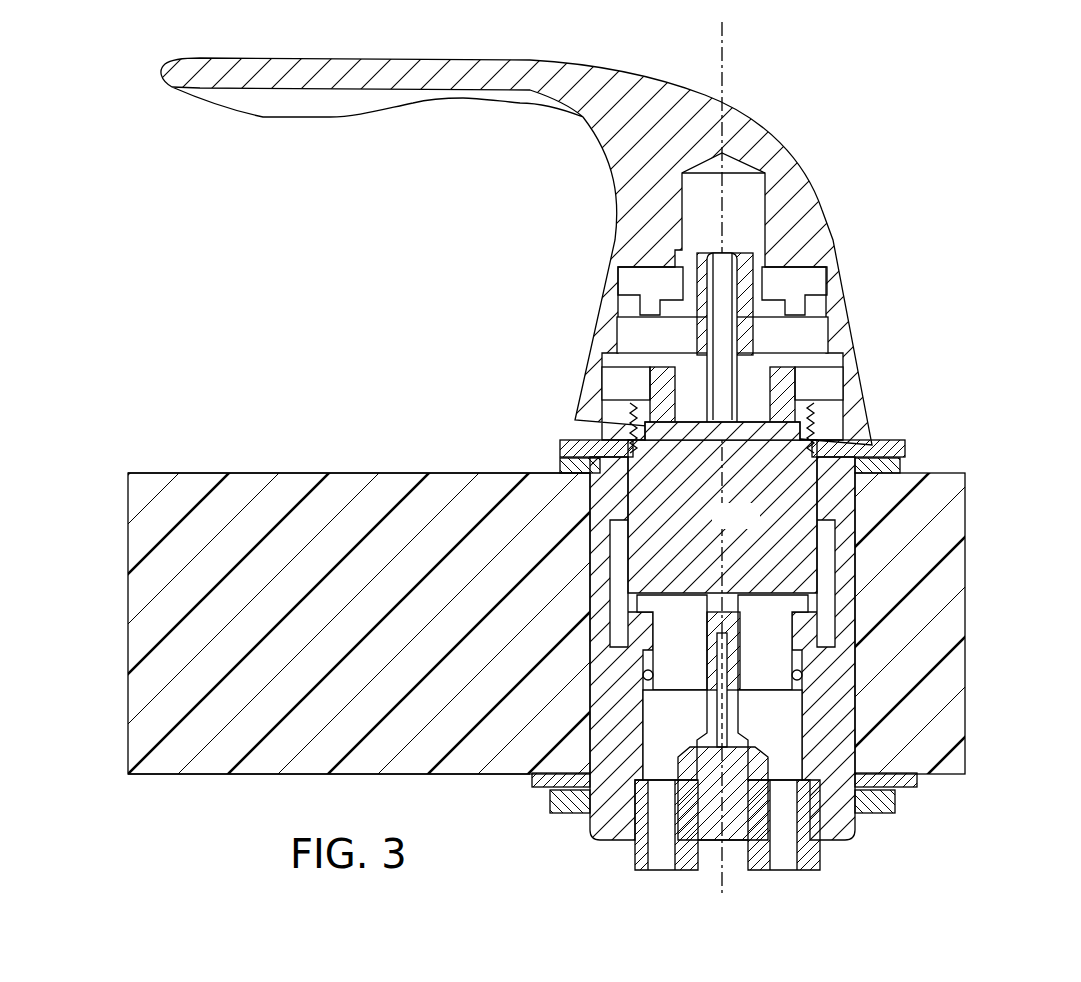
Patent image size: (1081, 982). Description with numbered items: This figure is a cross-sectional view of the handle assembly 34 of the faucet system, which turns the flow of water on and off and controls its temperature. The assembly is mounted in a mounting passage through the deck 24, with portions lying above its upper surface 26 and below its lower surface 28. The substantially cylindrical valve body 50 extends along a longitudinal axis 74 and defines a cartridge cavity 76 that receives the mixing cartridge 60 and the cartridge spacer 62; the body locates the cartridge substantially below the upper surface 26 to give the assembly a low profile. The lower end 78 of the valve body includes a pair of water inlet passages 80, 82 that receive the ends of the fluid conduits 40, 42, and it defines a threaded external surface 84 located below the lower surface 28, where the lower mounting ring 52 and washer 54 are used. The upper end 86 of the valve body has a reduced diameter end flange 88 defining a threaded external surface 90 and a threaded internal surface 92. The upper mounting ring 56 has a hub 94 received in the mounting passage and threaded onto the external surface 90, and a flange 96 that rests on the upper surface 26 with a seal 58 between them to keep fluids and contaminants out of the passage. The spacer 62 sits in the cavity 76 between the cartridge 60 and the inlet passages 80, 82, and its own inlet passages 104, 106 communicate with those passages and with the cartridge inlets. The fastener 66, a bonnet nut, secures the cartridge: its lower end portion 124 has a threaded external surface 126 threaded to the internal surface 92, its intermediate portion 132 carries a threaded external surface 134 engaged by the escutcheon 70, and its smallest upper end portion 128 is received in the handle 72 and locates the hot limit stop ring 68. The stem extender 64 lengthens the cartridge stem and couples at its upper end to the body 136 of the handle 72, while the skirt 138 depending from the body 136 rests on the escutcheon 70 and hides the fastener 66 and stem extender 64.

The deck 24 is at (140, 612).
The upper surface 26 is at (152, 472).
The lower surface 28 is at (152, 776).
The handle assembly 34 is at (316, 286).
The fluid conduit 40 is at (628, 860).
The fluid conduit 42 is at (808, 864).
The valve body 50 is at (842, 638).
The lower mounting ring 52 is at (558, 813).
The washer 54 is at (540, 786).
The upper mounting ring 56 is at (600, 465).
The seal 58 is at (566, 470).
The mixing cartridge 60 is at (783, 545).
The cartridge spacer 62 is at (812, 635).
The stem extender 64 is at (745, 287).
The fastener 66 is at (822, 410).
The hot limit stop ring 68 is at (672, 358).
The escutcheon 70 is at (868, 452).
The handle 72 is at (770, 133).
The longitudinal axis 74 is at (728, 30).
The cartridge cavity 76 is at (612, 596).
The lower end 78 is at (848, 824).
The water inlet passage 80 is at (658, 745).
The water inlet passage 82 is at (775, 758).
The threaded external surface 84 is at (862, 804).
The upper end 86 is at (856, 544).
The end flange 88 is at (860, 482).
The threaded external surface 90 is at (590, 478).
The threaded internal surface 92 is at (590, 505).
The hub 94 is at (625, 420).
The flange 96 is at (556, 456).
The inlet passage 104 is at (675, 653).
The inlet passage 106 is at (753, 662).
The lower end portion 124 is at (722, 507).
The threaded external surface 126 is at (860, 508).
The upper end portion 128 is at (835, 375).
The intermediate portion 132 is at (638, 420).
The threaded external surface 134 is at (822, 432).
The body 136 is at (807, 212).
The skirt 138 is at (830, 332).